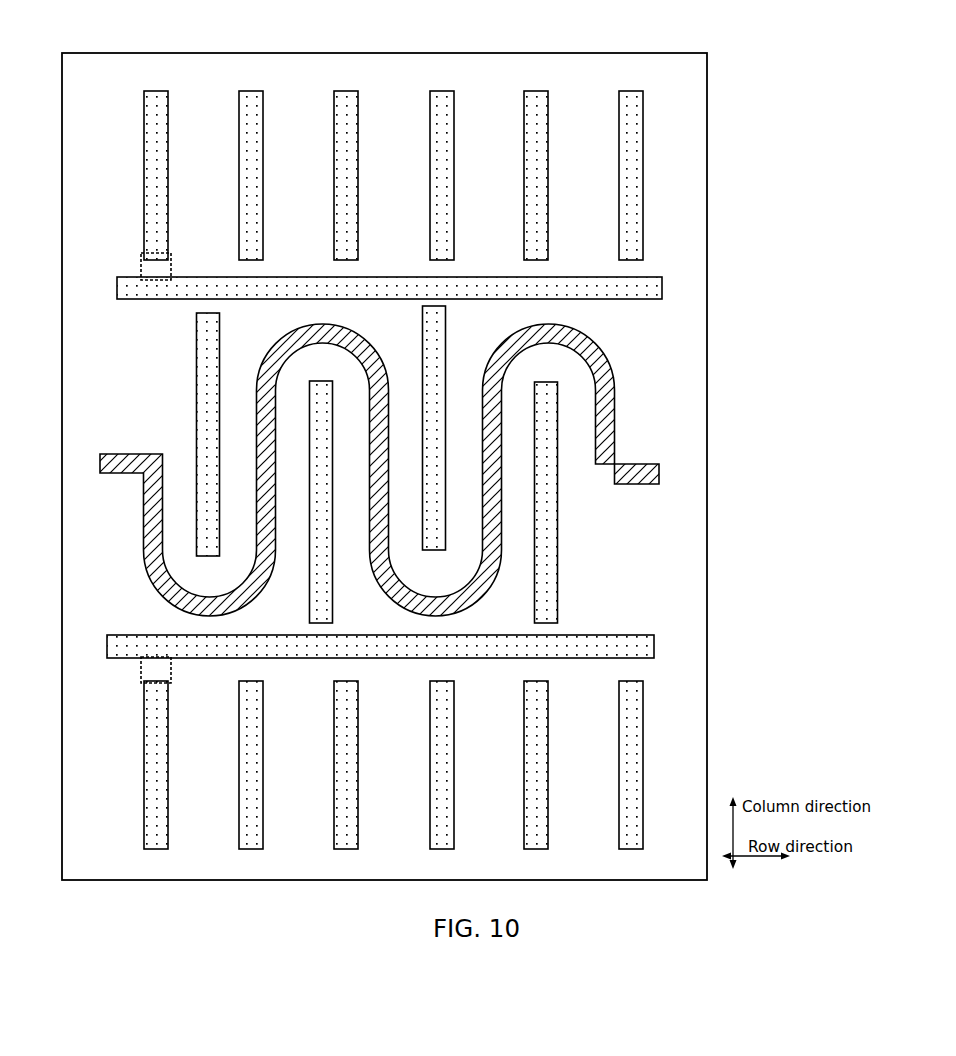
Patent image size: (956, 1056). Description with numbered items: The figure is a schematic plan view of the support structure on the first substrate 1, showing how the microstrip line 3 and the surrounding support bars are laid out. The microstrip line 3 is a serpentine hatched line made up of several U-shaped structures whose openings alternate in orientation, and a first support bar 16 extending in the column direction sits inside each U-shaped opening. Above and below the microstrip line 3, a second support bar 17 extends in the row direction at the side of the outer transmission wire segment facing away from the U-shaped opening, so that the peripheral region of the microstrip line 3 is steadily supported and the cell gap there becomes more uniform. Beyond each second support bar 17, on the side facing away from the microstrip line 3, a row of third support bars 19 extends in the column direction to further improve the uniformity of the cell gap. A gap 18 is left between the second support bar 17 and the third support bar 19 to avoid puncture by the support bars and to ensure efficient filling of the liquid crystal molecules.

The first substrate 1 is at (68, 397).
The microstrip line 3 is at (100, 462).
The first support bars 16 is at (434, 308).
The second support bars 17 is at (198, 283).
The gap 18 is at (141, 266).
The third support bars 19 is at (151, 163).